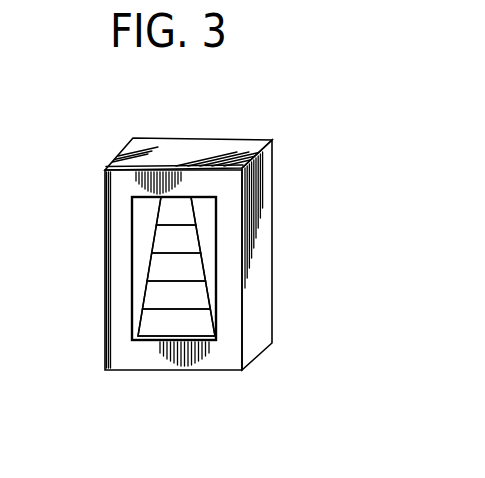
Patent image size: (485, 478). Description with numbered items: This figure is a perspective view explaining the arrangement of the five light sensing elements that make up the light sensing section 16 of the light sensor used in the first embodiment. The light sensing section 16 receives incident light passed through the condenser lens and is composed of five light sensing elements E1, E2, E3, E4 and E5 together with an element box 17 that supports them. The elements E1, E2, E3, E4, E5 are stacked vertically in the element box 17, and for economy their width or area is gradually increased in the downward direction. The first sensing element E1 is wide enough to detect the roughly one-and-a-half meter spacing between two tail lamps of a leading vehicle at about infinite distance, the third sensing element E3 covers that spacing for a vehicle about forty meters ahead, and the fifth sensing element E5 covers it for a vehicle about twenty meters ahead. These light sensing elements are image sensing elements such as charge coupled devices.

The element box 17 is at (218, 146).
The light sensing section 16 is at (158, 347).
The first light sensing element E1 is at (168, 206).
The second light sensing element E2 is at (162, 242).
The third light sensing element E3 is at (157, 269).
The fourth light sensing element E4 is at (151, 296).
The fifth light sensing element E5 is at (151, 323).